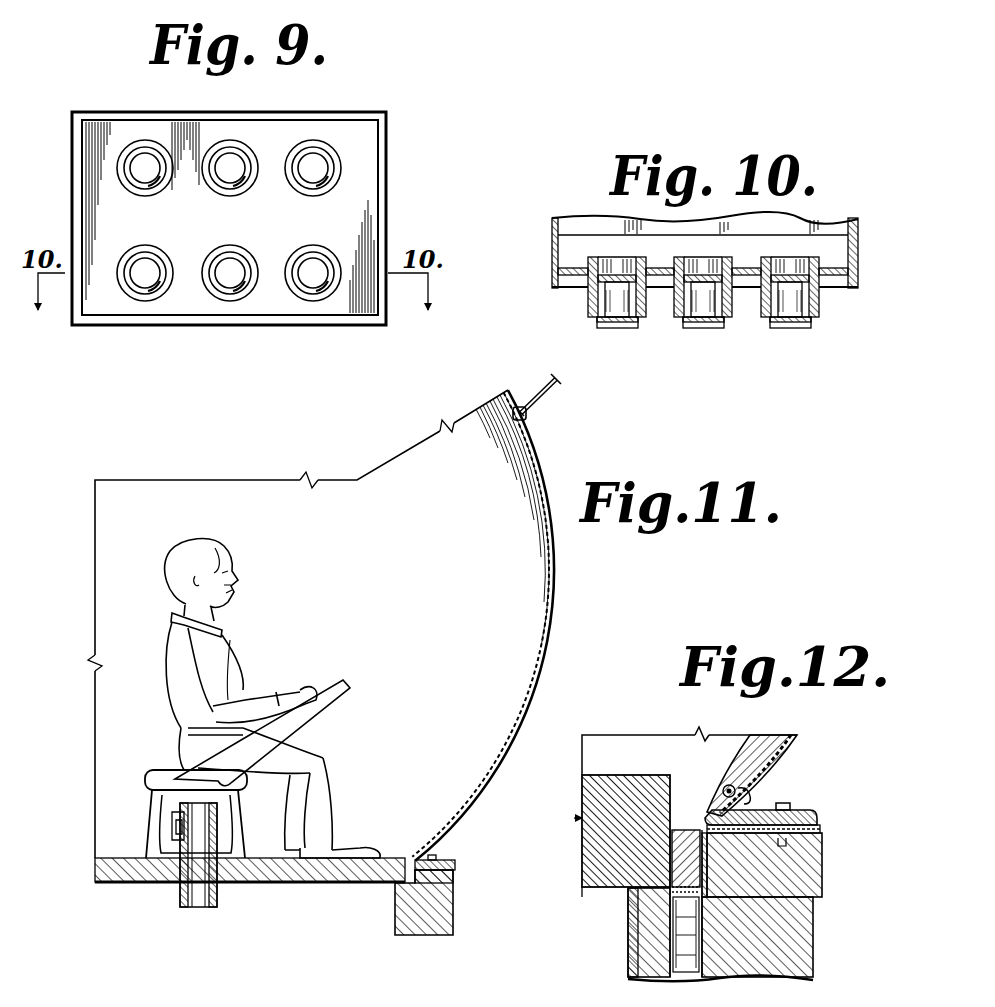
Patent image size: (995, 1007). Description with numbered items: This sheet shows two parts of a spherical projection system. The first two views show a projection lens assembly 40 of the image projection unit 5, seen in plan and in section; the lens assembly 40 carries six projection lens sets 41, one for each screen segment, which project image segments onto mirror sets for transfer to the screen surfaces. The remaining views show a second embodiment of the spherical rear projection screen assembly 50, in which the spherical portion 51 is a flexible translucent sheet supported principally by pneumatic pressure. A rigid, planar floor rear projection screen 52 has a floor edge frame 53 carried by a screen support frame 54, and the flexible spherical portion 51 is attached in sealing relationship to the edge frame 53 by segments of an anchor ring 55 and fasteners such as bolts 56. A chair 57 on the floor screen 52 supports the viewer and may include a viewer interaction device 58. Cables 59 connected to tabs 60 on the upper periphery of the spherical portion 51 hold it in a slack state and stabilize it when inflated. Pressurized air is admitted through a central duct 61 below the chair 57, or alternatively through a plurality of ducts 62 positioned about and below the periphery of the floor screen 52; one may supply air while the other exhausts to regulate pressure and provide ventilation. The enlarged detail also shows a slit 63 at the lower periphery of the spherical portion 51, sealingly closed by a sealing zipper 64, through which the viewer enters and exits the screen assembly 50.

In FIG. 9, the image projection unit 5 is at (384, 113).
In FIG. 10, the image projection unit 5 is at (860, 224).
In FIG. 9, the projection lens assembly 40 is at (80, 110).
In FIG. 10, the projection lens assembly 40 is at (549, 246).
In FIG. 9, the projection lens sets 41 is at (136, 262).
In FIG. 10, the projection lens sets 41 is at (605, 322).
In FIG. 11, the second embodiment of the spherical rear projection screen assembly 50 is at (557, 600).
In FIG. 12, the second embodiment of the spherical rear projection screen assembly 50 is at (665, 732).
In FIG. 11, the spherical portion 51 is at (554, 562).
In FIG. 12, the spherical portion 51 is at (790, 741).
In FIG. 11, the floor rear projection screen 52 is at (130, 874).
In FIG. 12, the floor rear projection screen 52 is at (580, 866).
In FIG. 11, the floor edge frame 53 is at (455, 878).
In FIG. 12, the floor edge frame 53 is at (824, 871).
In FIG. 11, the screen support frame 54 is at (393, 920).
In FIG. 12, the screen support frame 54 is at (815, 951).
In FIG. 11, the anchor ring 55 is at (456, 864).
In FIG. 12, the anchor ring 55 is at (820, 817).
In FIG. 11, the bolts 56 is at (437, 856).
In FIG. 12, the bolts 56 is at (790, 805).
In FIG. 11, the chair 57 is at (157, 772).
In FIG. 11, the viewer interaction device 58 is at (336, 683).
In FIG. 11, the cables 59 is at (536, 395).
In FIG. 11, the tabs 60 is at (529, 417).
In FIG. 11, the central duct 61 is at (219, 898).
In FIG. 12, the ducts 62 is at (688, 974).
In FIG. 12, the slit 63 is at (722, 790).
In FIG. 12, the sealing zipper 64 is at (752, 796).